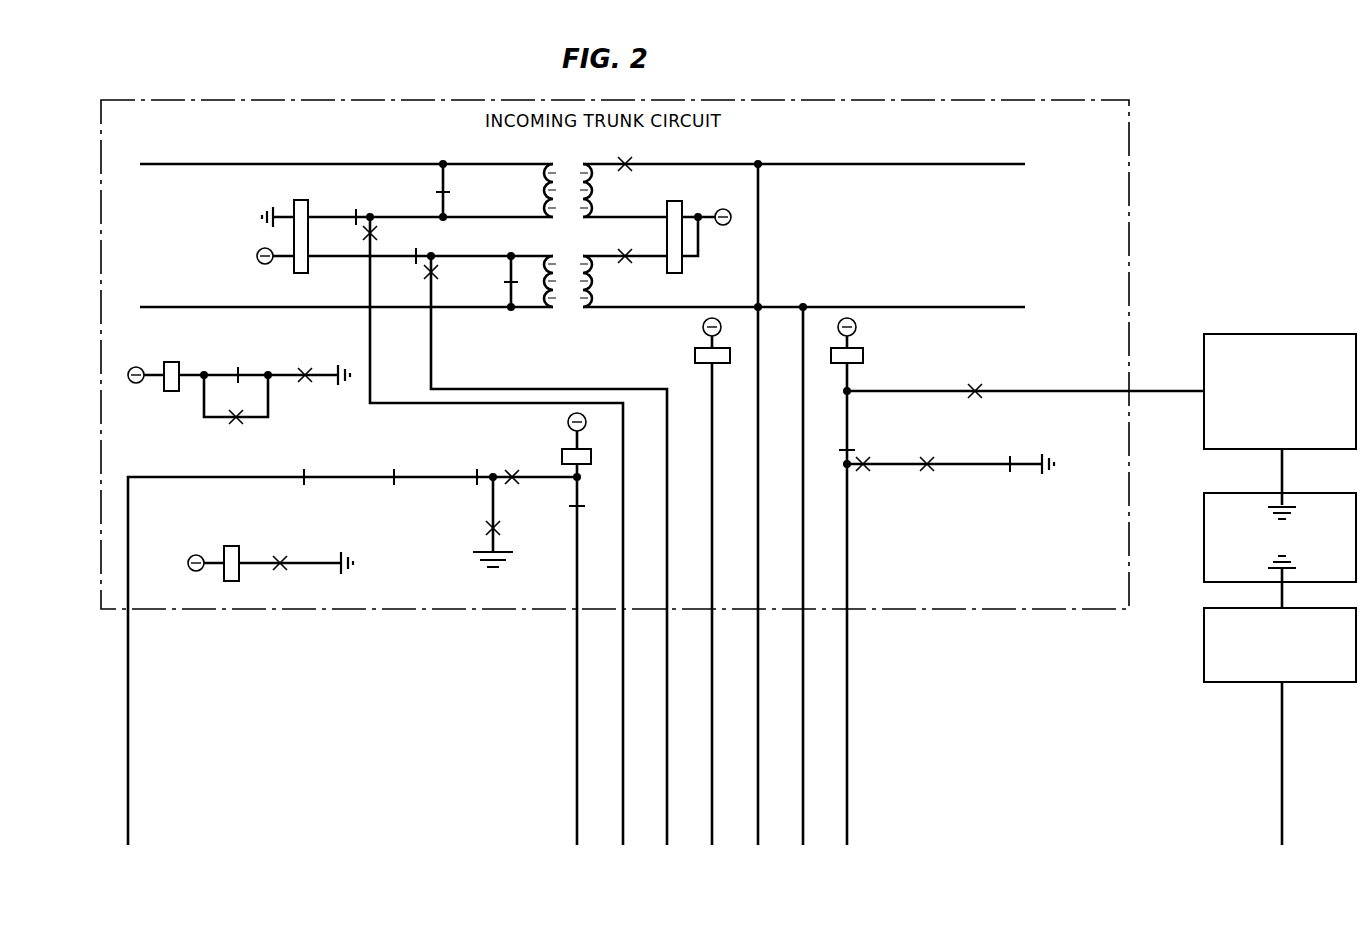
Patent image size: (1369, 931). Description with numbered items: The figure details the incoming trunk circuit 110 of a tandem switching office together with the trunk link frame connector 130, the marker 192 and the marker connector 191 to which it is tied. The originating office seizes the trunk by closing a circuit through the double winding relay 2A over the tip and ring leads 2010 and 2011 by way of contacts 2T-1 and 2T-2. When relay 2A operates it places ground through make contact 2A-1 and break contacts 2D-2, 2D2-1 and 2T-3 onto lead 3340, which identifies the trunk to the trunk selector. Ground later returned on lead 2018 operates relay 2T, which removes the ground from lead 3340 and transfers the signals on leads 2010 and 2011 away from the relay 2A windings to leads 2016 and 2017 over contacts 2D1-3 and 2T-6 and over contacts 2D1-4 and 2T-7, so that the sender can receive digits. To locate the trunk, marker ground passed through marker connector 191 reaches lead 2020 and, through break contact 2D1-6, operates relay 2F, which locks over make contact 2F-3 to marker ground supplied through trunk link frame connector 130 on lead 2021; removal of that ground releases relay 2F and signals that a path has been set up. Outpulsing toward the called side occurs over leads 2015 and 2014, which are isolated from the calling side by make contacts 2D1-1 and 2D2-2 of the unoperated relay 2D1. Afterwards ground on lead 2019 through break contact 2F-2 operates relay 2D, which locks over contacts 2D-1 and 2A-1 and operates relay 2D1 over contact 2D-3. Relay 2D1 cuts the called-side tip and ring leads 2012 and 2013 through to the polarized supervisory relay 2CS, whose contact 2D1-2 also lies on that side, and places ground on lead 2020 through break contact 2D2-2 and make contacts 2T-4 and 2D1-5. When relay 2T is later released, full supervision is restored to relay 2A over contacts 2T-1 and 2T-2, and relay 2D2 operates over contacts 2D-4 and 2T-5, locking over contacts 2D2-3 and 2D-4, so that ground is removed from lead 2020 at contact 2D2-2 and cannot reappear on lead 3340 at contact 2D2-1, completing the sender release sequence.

The incoming trunk circuit 110 is at (223, 100).
The trunk link frame connector 130 is at (1316, 334).
The marker 192 is at (1323, 492).
The marker connector 191 is at (1321, 612).
The tip lead 2010 is at (346, 153).
The ring lead 2011 is at (346, 295).
The tip lead 2012 is at (804, 153).
The ring lead 2013 is at (804, 296).
The lead 2014 is at (791, 574).
The lead 2015 is at (746, 502).
The lead 2016 is at (496, 531).
The lead 2017 is at (549, 550).
The lead 2018 is at (698, 604).
The lead 2019 is at (563, 661).
The lead 2020 is at (835, 604).
The lead 2021 is at (1025, 378).
The lead 3340 is at (341, 661).
The double winding relay 2A is at (350, 226).
The polarized supervisory relay 2CS is at (657, 226).
The relay 2D is at (564, 444).
The relay 2D1 is at (270, 553).
The relay 2D2 is at (239, 365).
The relay 2F is at (860, 341).
The relay 2T is at (700, 341).
The contact of relay 2T 2T-1 is at (348, 237).
The contact of relay 2T 2T-2 is at (410, 276).
The break contact of relay 2T 2T-3 is at (307, 486).
The make contact of relay 2T 2T-4 is at (927, 455).
The contact of relay 2T 2T-5 is at (236, 361).
The contact of relay 2T 2T-6 is at (370, 220).
The contact of relay 2T 2T-7 is at (432, 259).
The make contact of relay 2D1 2D1-1 is at (631, 153).
The contact of relay 2D1 2D1-2 is at (625, 244).
The contact of relay 2D1 2D1-3 is at (494, 190).
The contact of relay 2D1 2D1-4 is at (492, 281).
The make contact of relay 2D1 2D1-5 is at (950, 473).
The break contact of relay 2D1 2D1-6 is at (847, 448).
The contact of relay 2D 2D-1 is at (515, 464).
The break contact of relay 2D 2D-2 is at (469, 488).
The contact of relay 2D 2D-3 is at (279, 551).
The contact of relay 2D 2D-4 is at (303, 361).
The break contact of relay 2D2 2D2-1 is at (395, 465).
The break contact of relay 2D2 2D2-2 is at (1010, 474).
The contact of relay 2D2 2D2-3 is at (236, 411).
The make contact of relay 2A 2A-1 is at (477, 522).
The break contact of relay 2F 2F-2 is at (554, 502).
The make contact of relay 2F 2F-3 is at (975, 381).